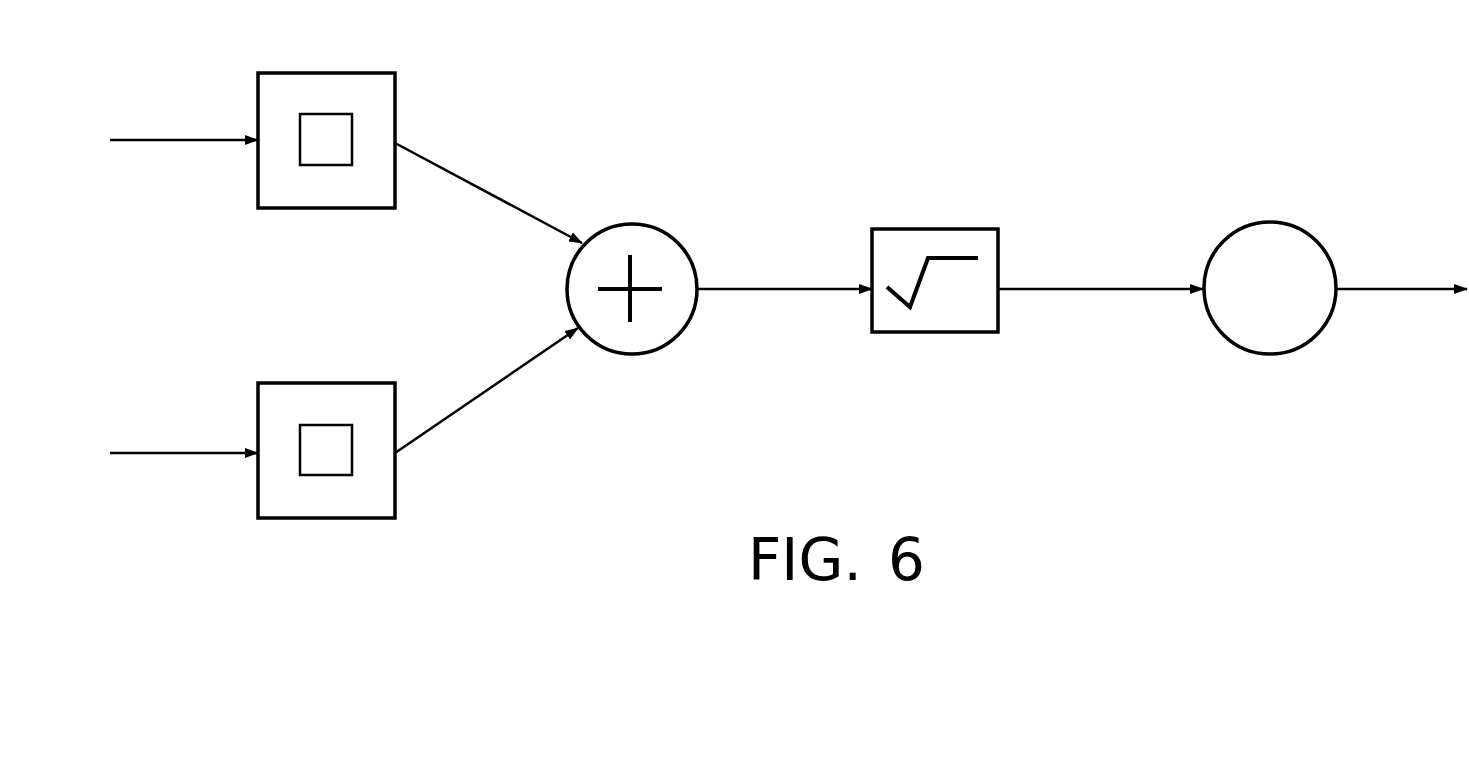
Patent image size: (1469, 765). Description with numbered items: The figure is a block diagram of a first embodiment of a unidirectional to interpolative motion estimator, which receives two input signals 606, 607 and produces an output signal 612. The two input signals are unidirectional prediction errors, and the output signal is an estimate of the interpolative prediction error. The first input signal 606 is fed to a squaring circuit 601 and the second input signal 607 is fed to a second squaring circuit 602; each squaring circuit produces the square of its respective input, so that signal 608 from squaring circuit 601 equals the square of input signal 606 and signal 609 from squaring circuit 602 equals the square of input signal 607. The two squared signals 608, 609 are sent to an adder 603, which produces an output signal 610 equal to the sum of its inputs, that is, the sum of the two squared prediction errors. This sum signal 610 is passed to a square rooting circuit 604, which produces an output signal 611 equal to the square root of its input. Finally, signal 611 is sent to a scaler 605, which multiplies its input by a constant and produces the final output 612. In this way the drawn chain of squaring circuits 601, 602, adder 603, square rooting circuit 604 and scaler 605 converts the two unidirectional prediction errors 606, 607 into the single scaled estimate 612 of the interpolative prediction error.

The squaring circuit 601 is at (305, 72).
The squaring circuit 602 is at (322, 520).
The adder 603 is at (673, 233).
The square rooting circuit 604 is at (912, 228).
The scaler 605 is at (1252, 222).
The input signal 606 is at (133, 140).
The input signal 607 is at (152, 452).
The signal 608 is at (490, 193).
The signal 609 is at (456, 411).
The output signal 610 is at (742, 290).
The output signal 611 is at (1047, 290).
The output signal 612 is at (1372, 290).